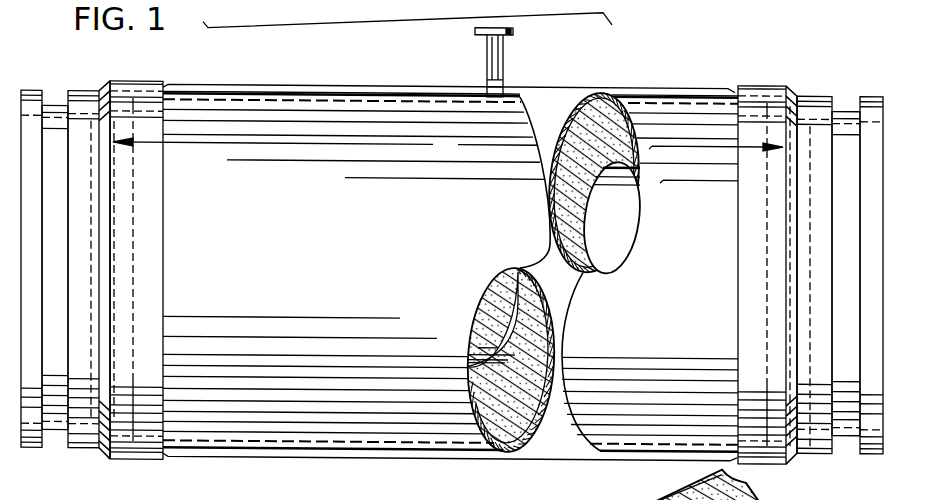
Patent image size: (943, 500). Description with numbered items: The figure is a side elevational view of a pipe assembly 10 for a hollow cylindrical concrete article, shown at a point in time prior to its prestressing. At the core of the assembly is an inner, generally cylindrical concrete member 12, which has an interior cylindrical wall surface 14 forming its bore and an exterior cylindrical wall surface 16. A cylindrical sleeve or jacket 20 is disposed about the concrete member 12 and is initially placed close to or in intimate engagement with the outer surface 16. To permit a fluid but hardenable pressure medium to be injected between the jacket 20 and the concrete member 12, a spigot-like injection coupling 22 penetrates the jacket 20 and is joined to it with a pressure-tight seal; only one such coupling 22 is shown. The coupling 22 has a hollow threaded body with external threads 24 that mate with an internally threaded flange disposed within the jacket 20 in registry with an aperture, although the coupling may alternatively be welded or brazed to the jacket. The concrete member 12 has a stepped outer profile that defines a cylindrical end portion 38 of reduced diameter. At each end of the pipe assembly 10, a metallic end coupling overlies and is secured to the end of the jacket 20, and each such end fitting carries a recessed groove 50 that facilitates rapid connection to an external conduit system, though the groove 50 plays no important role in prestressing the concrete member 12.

The pipe assembly 10 is at (718, 40).
The concrete member 12 is at (583, 92).
The interior cylindrical wall surface 14 is at (620, 225).
The exterior cylindrical wall surface 16 is at (667, 178).
The jacket 20 is at (322, 80).
The injection coupling 22 is at (505, 46).
The external threads 24 is at (505, 76).
The cylindrical end portion 38 is at (537, 494).
The recessed groove 50 is at (52, 128).